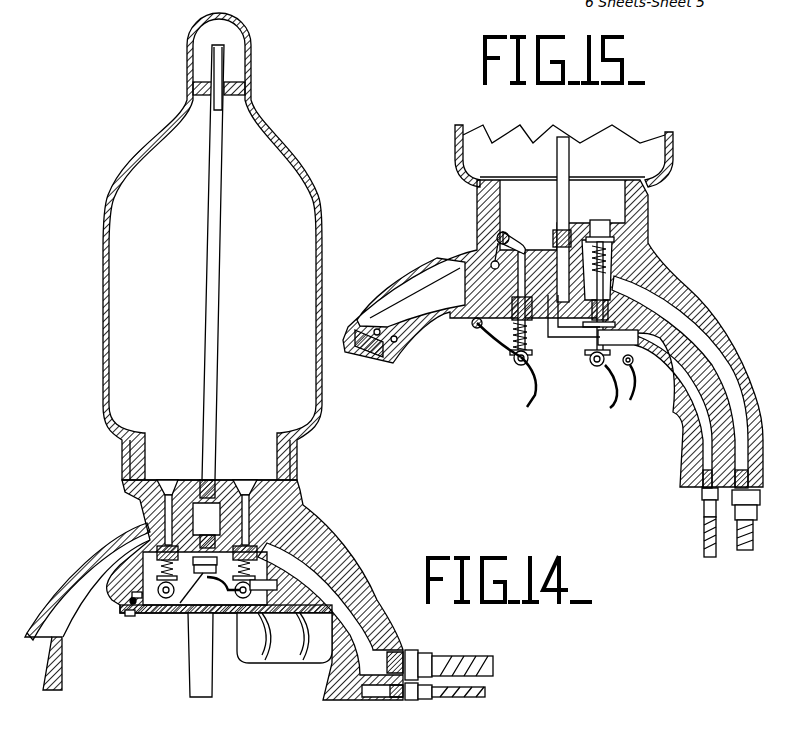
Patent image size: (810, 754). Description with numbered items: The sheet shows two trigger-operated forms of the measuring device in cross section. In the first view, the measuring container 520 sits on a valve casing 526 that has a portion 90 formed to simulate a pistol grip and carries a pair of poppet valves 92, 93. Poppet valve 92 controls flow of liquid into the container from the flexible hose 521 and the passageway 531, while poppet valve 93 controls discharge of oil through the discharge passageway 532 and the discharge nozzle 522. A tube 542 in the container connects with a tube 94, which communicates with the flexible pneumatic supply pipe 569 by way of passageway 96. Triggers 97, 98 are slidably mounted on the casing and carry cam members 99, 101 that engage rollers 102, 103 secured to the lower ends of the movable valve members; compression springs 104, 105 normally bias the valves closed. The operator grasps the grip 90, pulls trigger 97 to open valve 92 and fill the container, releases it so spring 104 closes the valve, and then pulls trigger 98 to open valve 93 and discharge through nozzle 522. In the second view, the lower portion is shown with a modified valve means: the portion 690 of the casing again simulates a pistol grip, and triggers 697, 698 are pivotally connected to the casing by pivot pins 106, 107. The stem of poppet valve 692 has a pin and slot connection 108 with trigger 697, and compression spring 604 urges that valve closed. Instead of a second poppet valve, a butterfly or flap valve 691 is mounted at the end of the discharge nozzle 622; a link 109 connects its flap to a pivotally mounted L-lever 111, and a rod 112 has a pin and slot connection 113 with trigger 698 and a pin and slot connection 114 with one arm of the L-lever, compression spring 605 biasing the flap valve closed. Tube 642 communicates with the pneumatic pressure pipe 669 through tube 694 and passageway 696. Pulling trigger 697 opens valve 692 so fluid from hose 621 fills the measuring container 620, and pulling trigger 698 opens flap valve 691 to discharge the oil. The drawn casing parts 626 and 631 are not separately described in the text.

In FIG. 14, the measuring container 520 is at (152, 131).
In FIG. 14, the tube 542 is at (208, 268).
In FIG. 14, the poppet valve 93 is at (166, 478).
In FIG. 14, the poppet valve 92 is at (244, 478).
In FIG. 14, the discharge passageway 532 is at (150, 530).
In FIG. 14, the valve casing 526 is at (262, 510).
In FIG. 14, the discharge nozzle 522 is at (62, 640).
In FIG. 14, the tube 94 is at (180, 613).
In FIG. 14, the cam member 99 is at (207, 615).
In FIG. 14, the trigger 98 is at (272, 640).
In FIG. 14, the trigger 97 is at (312, 640).
In FIG. 14, the compression spring 104 is at (277, 586).
In FIG. 14, the roller 102 is at (272, 598).
In FIG. 14, the compression spring 105 is at (140, 595).
In FIG. 14, the roller 103 is at (128, 601).
In FIG. 14, the cam member 101 is at (145, 615).
In FIG. 14, the pistol grip portion 90 is at (350, 572).
In FIG. 14, the passageway 531 is at (350, 598).
In FIG. 14, the passageway 96 is at (357, 670).
In FIG. 14, the flexible hose 521 is at (470, 657).
In FIG. 14, the flexible pneumatic supply pipe 569 is at (470, 690).
In FIG. 15, the measuring container 620 is at (725, 165).
In FIG. 15, the housing 626 is at (648, 247).
In FIG. 15, the compression spring 604 is at (606, 266).
In FIG. 15, the pistol grip portion 690 is at (700, 300).
In FIG. 15, the wall 631 is at (683, 322).
In FIG. 15, the passageway 696 is at (703, 417).
In FIG. 15, the tube 642 is at (570, 153).
In FIG. 15, the poppet valve 692 is at (598, 220).
In FIG. 15, the tube 694 is at (590, 358).
In FIG. 15, the pin and slot connection 108 is at (590, 365).
In FIG. 15, the compression spring 605 is at (568, 332).
In FIG. 15, the trigger 697 is at (618, 390).
In FIG. 15, the pivot pin 106 is at (633, 366).
In FIG. 15, the rod 112 is at (520, 282).
In FIG. 15, the pin and slot connection 114 is at (515, 248).
In FIG. 15, the L-lever 111 is at (497, 257).
In FIG. 15, the link 109 is at (493, 265).
In FIG. 15, the discharge nozzle 622 is at (405, 341).
In FIG. 15, the butterfly or flap valve 691 is at (363, 353).
In FIG. 15, the pivot pin 107 is at (475, 330).
In FIG. 15, the pin and slot connection 113 is at (510, 364).
In FIG. 15, the trigger 698 is at (540, 388).
In FIG. 15, the pneumatic pressure pipe 669 is at (703, 525).
In FIG. 15, the hose 621 is at (752, 545).